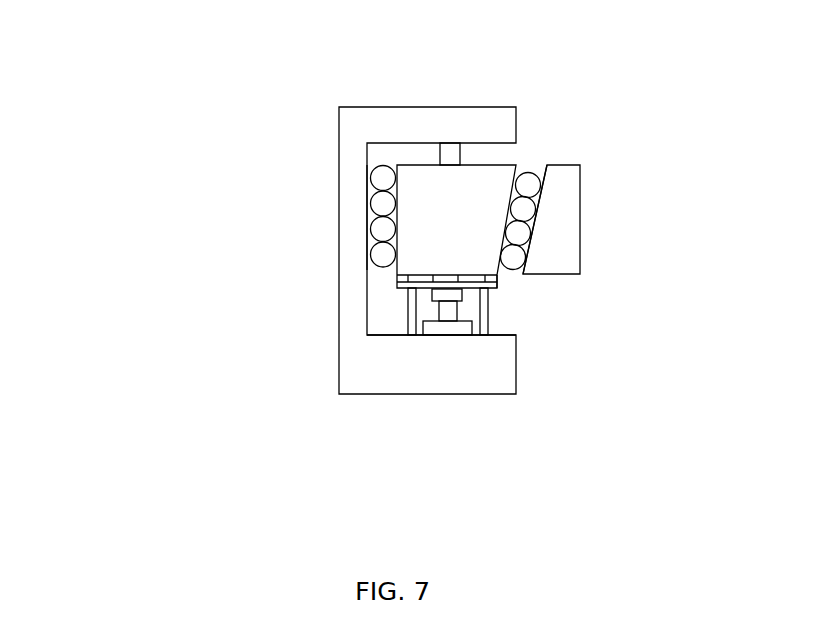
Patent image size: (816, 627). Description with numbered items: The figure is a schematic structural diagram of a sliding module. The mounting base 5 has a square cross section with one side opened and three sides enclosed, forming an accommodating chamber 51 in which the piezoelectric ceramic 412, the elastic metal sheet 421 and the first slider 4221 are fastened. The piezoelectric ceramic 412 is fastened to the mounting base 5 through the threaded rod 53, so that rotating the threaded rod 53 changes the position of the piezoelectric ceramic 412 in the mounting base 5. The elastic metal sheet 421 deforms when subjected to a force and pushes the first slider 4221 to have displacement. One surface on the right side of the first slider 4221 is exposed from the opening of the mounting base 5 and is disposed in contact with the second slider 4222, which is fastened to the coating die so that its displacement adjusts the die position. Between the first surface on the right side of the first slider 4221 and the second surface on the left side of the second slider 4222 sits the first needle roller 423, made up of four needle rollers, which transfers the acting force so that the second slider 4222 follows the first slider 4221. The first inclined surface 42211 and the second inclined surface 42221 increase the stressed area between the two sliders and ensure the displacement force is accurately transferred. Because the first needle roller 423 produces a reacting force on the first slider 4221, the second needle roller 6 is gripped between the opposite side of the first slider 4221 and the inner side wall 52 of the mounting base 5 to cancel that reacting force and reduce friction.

The mounting base 5 is at (323, 250).
The second needle roller 6 is at (251, 194).
The accommodating chamber 51 is at (288, 370).
The inner side wall 52 is at (262, 180).
The threaded rod 53 is at (386, 393).
The piezoelectric ceramic 412 is at (258, 357).
The elastic metal sheet 421 is at (309, 292).
The first needle roller 423 is at (463, 153).
The first slider 4221 is at (356, 169).
The second slider 4222 is at (645, 268).
The first inclined surface 42211 is at (593, 395).
The second inclined surface 42221 is at (633, 306).